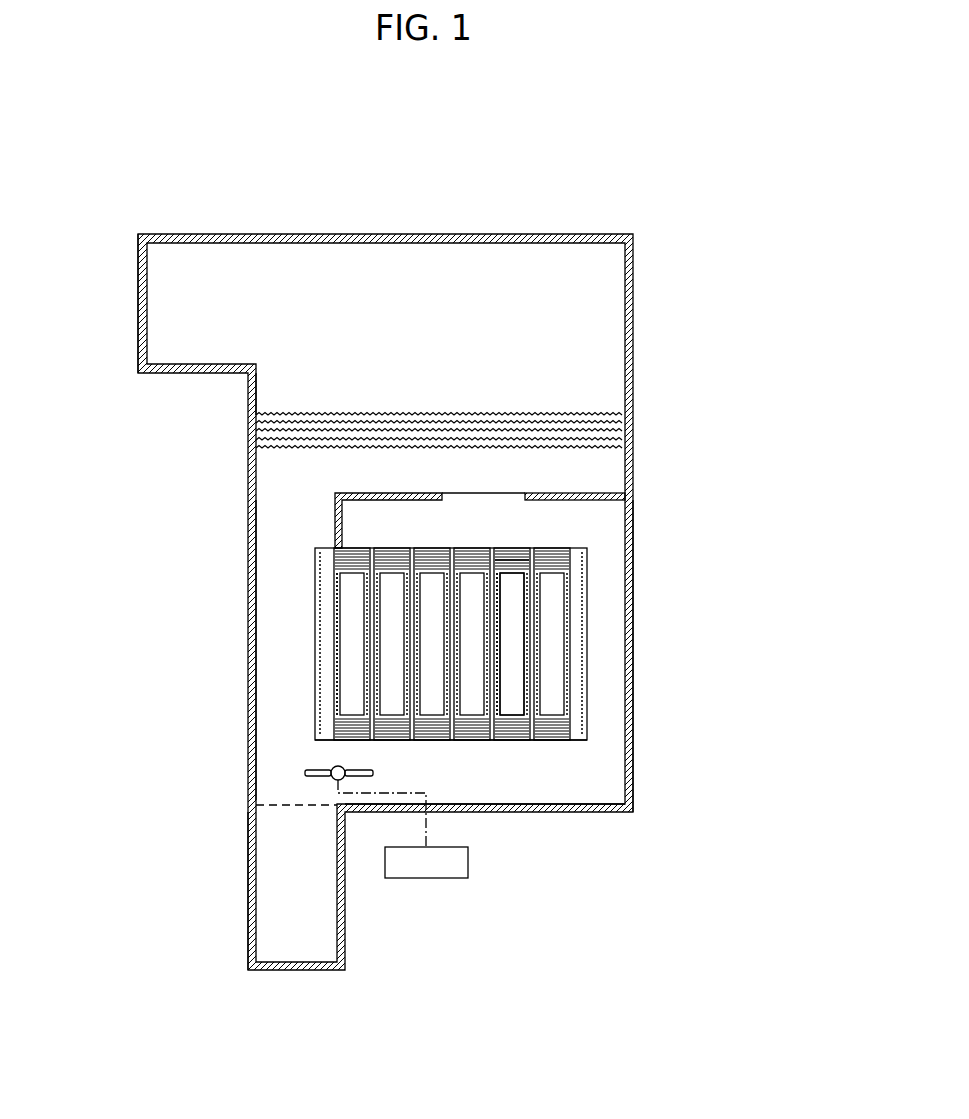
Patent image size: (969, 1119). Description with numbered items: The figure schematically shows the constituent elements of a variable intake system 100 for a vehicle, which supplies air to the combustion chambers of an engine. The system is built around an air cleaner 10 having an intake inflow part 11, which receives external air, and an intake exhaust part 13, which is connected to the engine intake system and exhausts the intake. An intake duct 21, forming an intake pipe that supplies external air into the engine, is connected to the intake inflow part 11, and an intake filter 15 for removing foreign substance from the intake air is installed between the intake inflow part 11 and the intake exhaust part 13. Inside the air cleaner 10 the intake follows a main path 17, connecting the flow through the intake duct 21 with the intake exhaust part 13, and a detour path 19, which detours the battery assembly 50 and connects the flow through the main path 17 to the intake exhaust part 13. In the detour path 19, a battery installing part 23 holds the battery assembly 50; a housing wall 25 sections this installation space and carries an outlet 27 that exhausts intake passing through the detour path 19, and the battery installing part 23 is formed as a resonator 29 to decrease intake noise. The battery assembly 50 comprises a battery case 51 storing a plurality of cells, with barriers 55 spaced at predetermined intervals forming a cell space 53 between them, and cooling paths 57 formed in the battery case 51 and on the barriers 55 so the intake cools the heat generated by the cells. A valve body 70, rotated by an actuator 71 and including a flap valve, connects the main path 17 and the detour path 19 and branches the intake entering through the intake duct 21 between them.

The variable intake system 100 is at (402, 160).
The air cleaner 10 is at (638, 333).
The intake exhaust part 13 is at (138, 300).
The intake filter 15 is at (285, 415).
The outlet 27 is at (583, 430).
The housing wall 25 is at (578, 492).
The battery installing part 23 is at (326, 516).
The battery assembly 50 is at (306, 587).
The cell space 53 is at (515, 588).
The barrier 55 is at (497, 655).
The cooling path 57 is at (493, 607).
The main path 17 is at (267, 636).
The resonator 29 is at (635, 684).
The battery case 51 is at (510, 740).
The detour path 19 is at (482, 788).
The intake inflow part 11 is at (270, 806).
The intake duct 21 is at (248, 898).
The valve body 70 is at (358, 780).
The actuator 71 is at (424, 880).